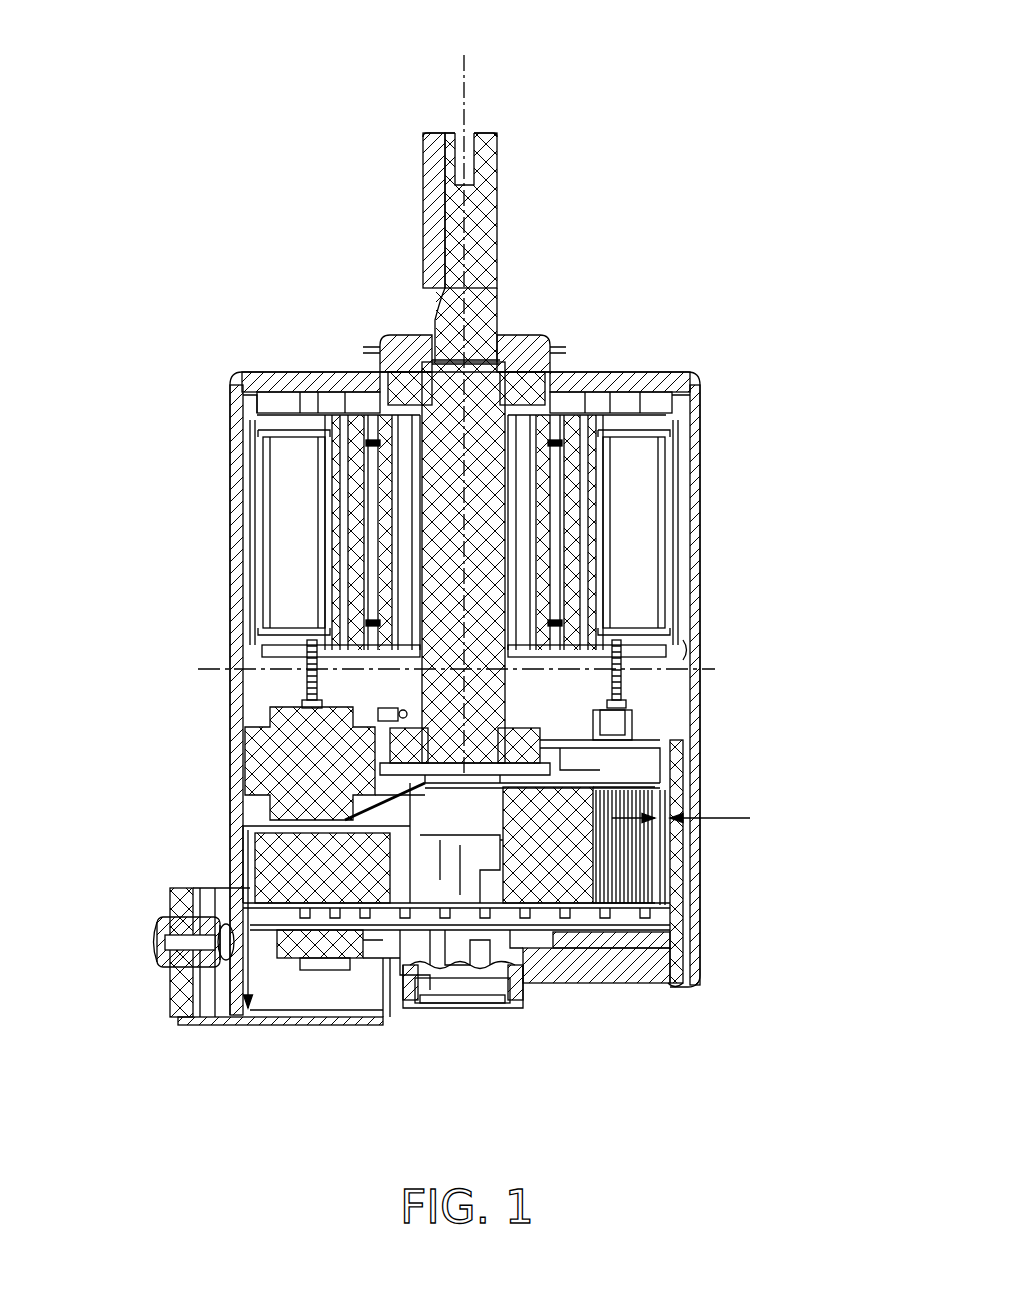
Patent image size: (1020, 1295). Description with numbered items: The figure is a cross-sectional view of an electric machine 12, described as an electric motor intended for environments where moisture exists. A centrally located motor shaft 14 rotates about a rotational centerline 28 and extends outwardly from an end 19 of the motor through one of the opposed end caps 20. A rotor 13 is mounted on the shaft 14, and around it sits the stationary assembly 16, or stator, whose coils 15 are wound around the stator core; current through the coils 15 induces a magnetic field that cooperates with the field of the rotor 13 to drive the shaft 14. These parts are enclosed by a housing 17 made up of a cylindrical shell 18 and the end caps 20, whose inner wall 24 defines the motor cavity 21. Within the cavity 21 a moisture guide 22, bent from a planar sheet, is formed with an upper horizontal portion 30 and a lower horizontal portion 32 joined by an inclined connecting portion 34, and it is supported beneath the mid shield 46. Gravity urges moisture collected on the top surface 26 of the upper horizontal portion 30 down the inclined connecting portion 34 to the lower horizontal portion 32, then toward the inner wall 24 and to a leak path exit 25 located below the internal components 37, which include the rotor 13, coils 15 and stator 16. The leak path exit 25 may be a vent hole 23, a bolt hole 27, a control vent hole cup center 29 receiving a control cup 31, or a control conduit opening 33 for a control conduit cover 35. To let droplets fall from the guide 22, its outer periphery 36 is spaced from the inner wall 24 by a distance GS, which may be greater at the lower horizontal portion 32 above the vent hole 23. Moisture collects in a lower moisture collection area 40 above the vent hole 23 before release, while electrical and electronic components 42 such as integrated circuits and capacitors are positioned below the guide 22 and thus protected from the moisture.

The electric machine 12 is at (680, 95).
The rotor 13 is at (603, 507).
The motor shaft 14 is at (490, 413).
The coils 15 is at (277, 462).
The stationary assembly 16 is at (263, 527).
The housing 17 is at (508, 642).
The cylindrical shell 18 is at (693, 520).
The end 19 is at (584, 366).
The end caps 20 is at (625, 367).
The motor cavity 21 is at (285, 684).
The moisture guide 22 is at (402, 790).
The vent hole 23 is at (213, 1025).
The inner wall 24 is at (693, 648).
The leak path exit 25 is at (412, 983).
The top surface 26 is at (355, 800).
The bolt hole 27 is at (690, 988).
The rotational centerline 28 is at (464, 63).
The control vent hole cup center 29 is at (462, 1012).
The upper horizontal portion 30 is at (530, 787).
The control cup 31 is at (497, 1008).
The lower horizontal portion 32 is at (318, 828).
The control conduit opening 33 is at (158, 940).
The inclined connecting portion 34 is at (425, 790).
The control conduit cover 35 is at (157, 920).
The outer periphery 36 is at (688, 748).
The internal components 37 is at (737, 776).
The lower moisture collection area 40 is at (283, 978).
The electrical and electronic components 42 is at (483, 913).
The mid shield 46 is at (548, 730).
The distance GS is at (701, 817).